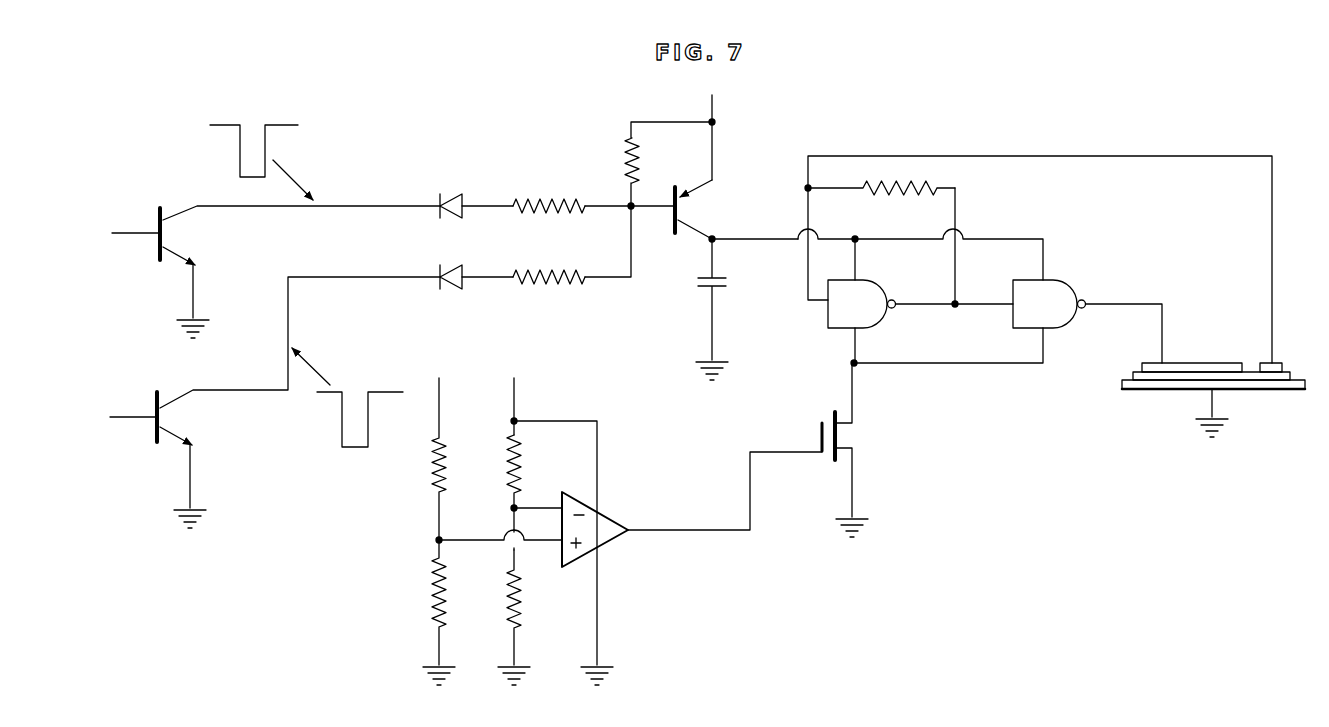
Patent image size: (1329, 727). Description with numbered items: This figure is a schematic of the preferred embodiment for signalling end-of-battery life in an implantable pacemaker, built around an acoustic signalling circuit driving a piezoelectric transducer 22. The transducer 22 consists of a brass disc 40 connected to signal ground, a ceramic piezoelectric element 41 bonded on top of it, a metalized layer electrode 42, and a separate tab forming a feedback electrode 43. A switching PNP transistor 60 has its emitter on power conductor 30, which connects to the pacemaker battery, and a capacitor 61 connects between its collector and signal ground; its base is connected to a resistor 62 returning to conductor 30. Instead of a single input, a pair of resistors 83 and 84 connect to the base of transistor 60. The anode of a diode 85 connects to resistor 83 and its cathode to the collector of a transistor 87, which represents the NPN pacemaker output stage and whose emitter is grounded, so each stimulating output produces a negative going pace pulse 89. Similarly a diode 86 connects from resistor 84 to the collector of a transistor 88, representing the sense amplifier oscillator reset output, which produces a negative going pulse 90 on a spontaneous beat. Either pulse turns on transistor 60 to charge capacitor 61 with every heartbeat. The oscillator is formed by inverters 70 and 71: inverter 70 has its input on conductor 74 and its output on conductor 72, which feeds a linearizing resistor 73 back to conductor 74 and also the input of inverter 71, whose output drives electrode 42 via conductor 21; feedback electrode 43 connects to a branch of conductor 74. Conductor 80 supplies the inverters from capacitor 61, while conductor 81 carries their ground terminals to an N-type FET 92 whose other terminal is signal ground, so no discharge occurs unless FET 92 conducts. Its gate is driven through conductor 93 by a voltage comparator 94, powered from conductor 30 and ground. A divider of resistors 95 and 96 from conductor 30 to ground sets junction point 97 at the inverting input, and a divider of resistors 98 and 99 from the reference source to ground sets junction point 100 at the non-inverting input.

The conductor 21 is at (1122, 304).
The transducer 22 is at (1189, 383).
The power conductor 30 is at (715, 111).
The brass disc 40 is at (1122, 378).
The ceramic piezoelectric element 41 is at (1133, 371).
The metalized layer electrode 42 is at (1184, 362).
The feedback electrode 43 is at (1278, 363).
The switching PNP transistor 60 is at (703, 220).
The capacitor 61 is at (700, 277).
The resistor 62 is at (623, 157).
The inverter 70 is at (842, 313).
The inverter 71 is at (1023, 321).
The conductor 72 is at (953, 263).
The linearizing resistor 73 is at (923, 189).
The conductor 74 is at (921, 155).
The conductor 80 is at (887, 239).
The conductor 81 is at (945, 364).
The resistor 83 is at (538, 199).
The resistor 84 is at (548, 260).
The diode 85 is at (455, 194).
The diode 86 is at (453, 265).
The transistor 87 is at (184, 238).
The transistor 88 is at (186, 419).
The negative going pace pulse 89 is at (282, 125).
The negative going output pulse 90 is at (385, 392).
The N-type FET 92 is at (848, 436).
The conductor 93 is at (748, 494).
The voltage comparator 94 is at (606, 518).
The resistor 95 is at (521, 464).
The resistor 96 is at (521, 611).
The junction point 97 is at (529, 508).
The resistor 98 is at (432, 466).
The resistor 99 is at (432, 604).
The junction point 100 is at (467, 538).